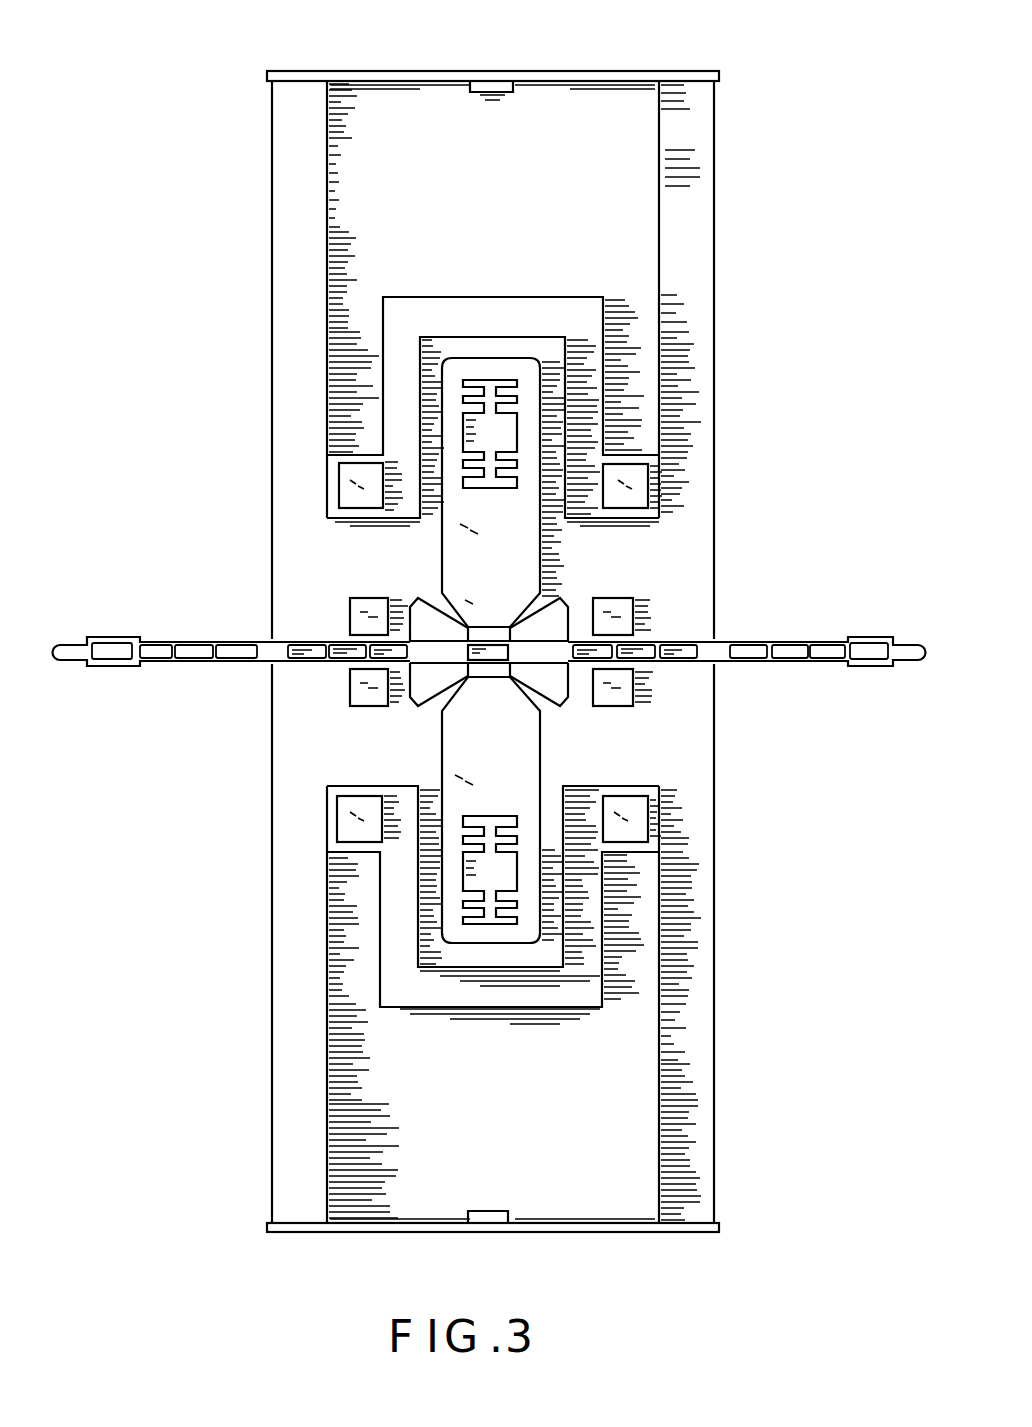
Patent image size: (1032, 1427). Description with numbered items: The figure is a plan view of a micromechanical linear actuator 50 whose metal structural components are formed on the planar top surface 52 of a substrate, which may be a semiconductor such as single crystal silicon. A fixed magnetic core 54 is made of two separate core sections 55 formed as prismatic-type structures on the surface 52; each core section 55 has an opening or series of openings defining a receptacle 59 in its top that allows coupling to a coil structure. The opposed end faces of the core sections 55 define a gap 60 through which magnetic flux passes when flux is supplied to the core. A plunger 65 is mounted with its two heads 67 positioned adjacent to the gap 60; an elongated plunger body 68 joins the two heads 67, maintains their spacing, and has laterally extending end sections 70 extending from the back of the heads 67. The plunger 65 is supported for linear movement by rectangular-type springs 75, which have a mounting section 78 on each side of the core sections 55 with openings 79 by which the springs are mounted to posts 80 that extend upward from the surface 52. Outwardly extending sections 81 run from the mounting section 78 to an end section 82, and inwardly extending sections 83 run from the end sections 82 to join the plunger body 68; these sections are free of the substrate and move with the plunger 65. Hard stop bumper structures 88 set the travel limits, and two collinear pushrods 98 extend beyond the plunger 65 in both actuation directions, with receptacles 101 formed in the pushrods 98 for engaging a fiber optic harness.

The linear actuator 50 is at (747, 145).
The planar top surface 52 is at (201, 1160).
The fixed magnetic core 54 is at (547, 539).
The core sections 55 is at (442, 549).
The receptacle 59 is at (508, 433).
The gap 60 is at (493, 630).
The plunger 65 is at (342, 636).
The heads 67 is at (430, 668).
The plunger body 68 is at (667, 640).
The end sections 70 is at (688, 664).
The springs 75 is at (272, 170).
The mounting section 78 is at (355, 454).
The openings 79 is at (339, 465).
The posts 80 is at (346, 496).
The outwardly extending sections 81 is at (328, 192).
The end section 82 is at (582, 71).
The inwardly extending sections 83 is at (272, 250).
The hard stop bumper structures 88 is at (378, 598).
The pushrods 98 is at (118, 667).
The receptacles 101 is at (115, 647).